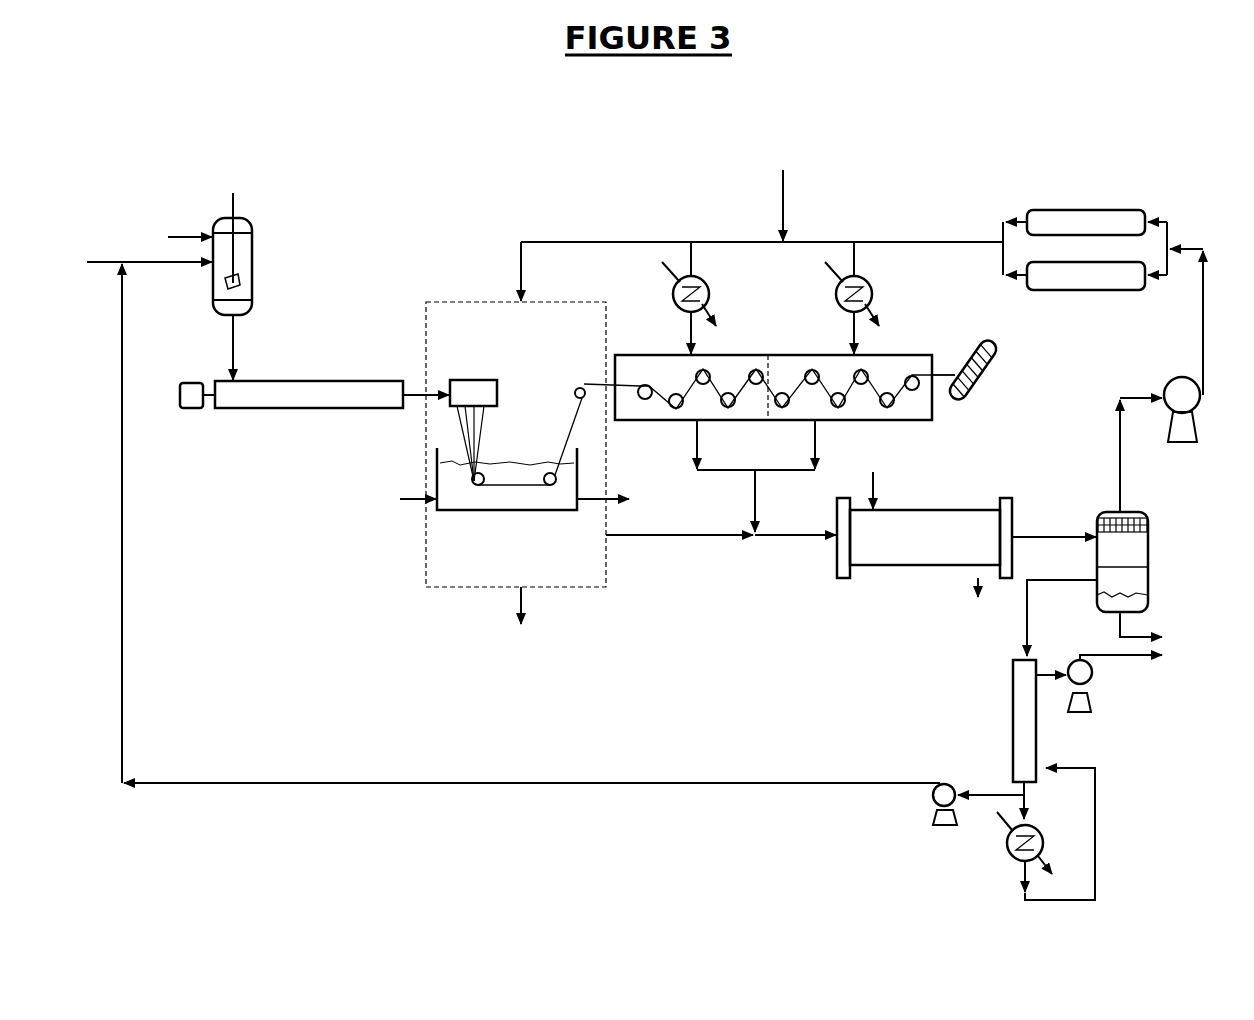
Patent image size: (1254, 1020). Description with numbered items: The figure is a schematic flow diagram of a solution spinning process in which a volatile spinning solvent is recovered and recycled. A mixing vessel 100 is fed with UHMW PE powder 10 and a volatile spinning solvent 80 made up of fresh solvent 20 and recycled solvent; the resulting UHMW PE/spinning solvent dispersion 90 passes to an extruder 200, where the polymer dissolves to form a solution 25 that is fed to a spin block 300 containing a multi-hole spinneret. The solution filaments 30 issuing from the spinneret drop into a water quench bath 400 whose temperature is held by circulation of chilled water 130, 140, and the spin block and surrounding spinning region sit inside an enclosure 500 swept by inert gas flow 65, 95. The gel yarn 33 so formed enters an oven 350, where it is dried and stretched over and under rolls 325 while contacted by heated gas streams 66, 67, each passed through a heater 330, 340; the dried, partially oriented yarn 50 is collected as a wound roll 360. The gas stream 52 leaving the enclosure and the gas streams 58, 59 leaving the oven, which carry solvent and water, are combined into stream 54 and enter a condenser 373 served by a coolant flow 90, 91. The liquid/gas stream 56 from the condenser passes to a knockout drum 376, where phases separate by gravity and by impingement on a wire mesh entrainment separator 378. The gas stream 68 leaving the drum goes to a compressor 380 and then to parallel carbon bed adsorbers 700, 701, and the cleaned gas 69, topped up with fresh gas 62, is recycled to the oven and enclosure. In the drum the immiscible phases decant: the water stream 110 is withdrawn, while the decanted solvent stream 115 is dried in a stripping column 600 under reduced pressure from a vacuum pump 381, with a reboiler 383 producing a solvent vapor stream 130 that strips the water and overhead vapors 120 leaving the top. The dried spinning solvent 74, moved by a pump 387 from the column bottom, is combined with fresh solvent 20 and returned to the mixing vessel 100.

The UHMW PE powder 10 is at (170, 232).
The fresh solvent 20 is at (130, 258).
The UHMW PE solution 25 is at (412, 390).
The solution filaments 30 is at (475, 413).
The gel yarn 33 is at (591, 382).
The dried, partially oriented yarn 50 is at (950, 370).
The gas stream leaving the spinning enclosure 52 is at (697, 537).
The combined gas stream 54 is at (790, 537).
The liquid/gas stream 56 is at (1032, 537).
The gas stream leaving the oven 58 is at (699, 446).
The gas stream leaving the oven 59 is at (815, 446).
The fresh gas 62 is at (762, 191).
The inert gas flow 65 is at (517, 272).
The inert gas stream 66 is at (697, 257).
The inert gas stream 67 is at (862, 257).
The gas stream leaving the knockout drum 68 is at (1123, 485).
The gas stream leaving the adsorber 69 is at (943, 242).
The dried spinning solvent 74 is at (850, 782).
The volatile spinning solvent stream 80 is at (167, 267).
The UHMW PE/spinning solvent dispersion 90 is at (235, 342).
The coolant flow 91 is at (976, 607).
The inert gas flow 95 is at (520, 618).
The mixing vessel 100 is at (255, 220).
The water stream 110 is at (1158, 624).
The decanted solvent stream 115 is at (1040, 580).
The column overhead stream 120 is at (1138, 667).
The chilled water / solvent vapor stream 130 is at (1117, 845).
The chilled water 140 is at (623, 494).
The extruder 200 is at (260, 412).
The spin block 300 is at (483, 379).
The rolls 325 is at (650, 393).
The heater 330 is at (673, 293).
The heater 340 is at (877, 295).
The oven 350 is at (780, 352).
The wound roll 360 is at (992, 362).
The condenser 373 is at (933, 510).
The knockout drum 376 is at (1152, 555).
The entrainment separator 378 is at (1150, 522).
The compressor 380 is at (1193, 425).
The vacuum pump 381 is at (1085, 703).
The reboiler 383 is at (1010, 850).
The pump 387 is at (932, 813).
The water quench bath 400 is at (535, 513).
The enclosure 500 is at (453, 587).
The stripping column 600 is at (1012, 723).
The adsorbent bed 700 is at (1093, 207).
The adsorbent bed 701 is at (1090, 292).